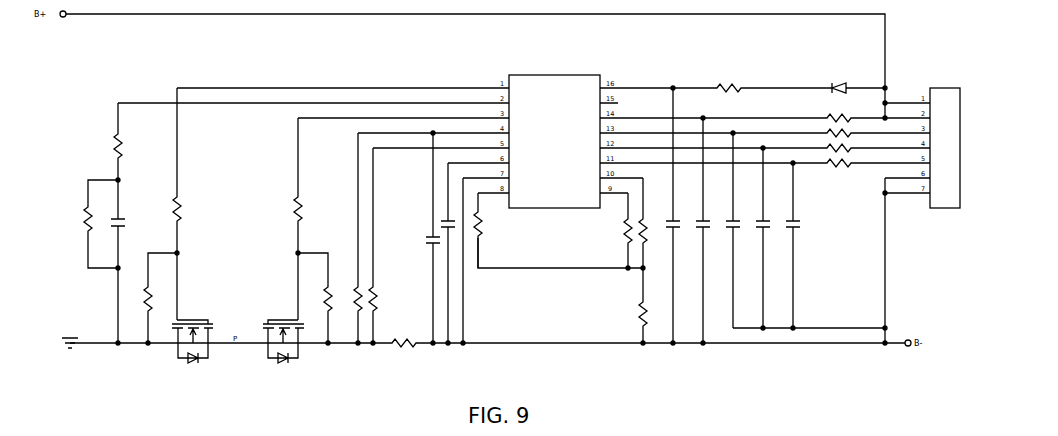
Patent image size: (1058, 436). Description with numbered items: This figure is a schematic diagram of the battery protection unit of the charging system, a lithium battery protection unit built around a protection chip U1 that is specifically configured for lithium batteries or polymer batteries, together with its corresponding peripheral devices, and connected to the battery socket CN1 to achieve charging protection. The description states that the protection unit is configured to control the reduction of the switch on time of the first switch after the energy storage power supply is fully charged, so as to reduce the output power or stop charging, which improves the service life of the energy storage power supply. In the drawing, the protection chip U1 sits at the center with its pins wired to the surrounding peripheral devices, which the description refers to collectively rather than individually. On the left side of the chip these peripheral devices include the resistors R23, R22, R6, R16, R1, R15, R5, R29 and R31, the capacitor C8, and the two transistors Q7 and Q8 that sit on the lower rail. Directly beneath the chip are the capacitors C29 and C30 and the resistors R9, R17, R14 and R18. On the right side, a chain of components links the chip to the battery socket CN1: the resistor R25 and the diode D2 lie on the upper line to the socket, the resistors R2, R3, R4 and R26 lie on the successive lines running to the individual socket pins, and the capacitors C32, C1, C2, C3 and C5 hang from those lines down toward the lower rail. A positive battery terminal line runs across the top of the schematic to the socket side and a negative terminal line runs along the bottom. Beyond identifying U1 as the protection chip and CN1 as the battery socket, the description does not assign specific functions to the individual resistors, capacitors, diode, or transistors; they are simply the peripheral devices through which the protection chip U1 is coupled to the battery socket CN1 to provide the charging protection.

The protection chip U1 is at (554, 137).
The resistor R23 is at (125, 141).
The capacitor C8 is at (114, 261).
The resistor R22 is at (97, 224).
The resistor R6 is at (182, 204).
The resistor R16 is at (157, 299).
The MOSFET transistor Q7 is at (185, 337).
The resistor R1 is at (302, 219).
The MOSFET transistor Q8 is at (276, 337).
The resistor R15 is at (315, 299).
The resistor R5 is at (354, 239).
The resistor R29 is at (381, 246).
The resistor R31 is at (403, 338).
The capacitor C29 is at (431, 238).
The capacitor C30 is at (446, 254).
The resistor R9 is at (474, 230).
The resistor R17 is at (624, 231).
The resistor R14 is at (639, 239).
The resistor R18 is at (639, 322).
The resistor R25 is at (729, 85).
The diode D2 is at (859, 89).
The resistor R2 is at (839, 114).
The resistor R3 is at (839, 129).
The resistor R4 is at (839, 144).
The resistor R26 is at (839, 159).
The capacitor C32 is at (671, 215).
The capacitor C1 is at (701, 230).
The capacitor C2 is at (731, 229).
The capacitor C3 is at (761, 238).
The capacitor C5 is at (791, 245).
The battery socket CN1 is at (945, 143).